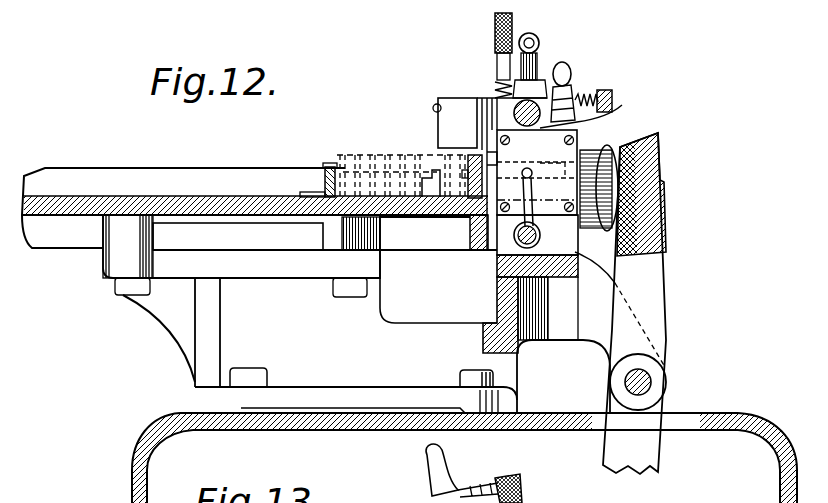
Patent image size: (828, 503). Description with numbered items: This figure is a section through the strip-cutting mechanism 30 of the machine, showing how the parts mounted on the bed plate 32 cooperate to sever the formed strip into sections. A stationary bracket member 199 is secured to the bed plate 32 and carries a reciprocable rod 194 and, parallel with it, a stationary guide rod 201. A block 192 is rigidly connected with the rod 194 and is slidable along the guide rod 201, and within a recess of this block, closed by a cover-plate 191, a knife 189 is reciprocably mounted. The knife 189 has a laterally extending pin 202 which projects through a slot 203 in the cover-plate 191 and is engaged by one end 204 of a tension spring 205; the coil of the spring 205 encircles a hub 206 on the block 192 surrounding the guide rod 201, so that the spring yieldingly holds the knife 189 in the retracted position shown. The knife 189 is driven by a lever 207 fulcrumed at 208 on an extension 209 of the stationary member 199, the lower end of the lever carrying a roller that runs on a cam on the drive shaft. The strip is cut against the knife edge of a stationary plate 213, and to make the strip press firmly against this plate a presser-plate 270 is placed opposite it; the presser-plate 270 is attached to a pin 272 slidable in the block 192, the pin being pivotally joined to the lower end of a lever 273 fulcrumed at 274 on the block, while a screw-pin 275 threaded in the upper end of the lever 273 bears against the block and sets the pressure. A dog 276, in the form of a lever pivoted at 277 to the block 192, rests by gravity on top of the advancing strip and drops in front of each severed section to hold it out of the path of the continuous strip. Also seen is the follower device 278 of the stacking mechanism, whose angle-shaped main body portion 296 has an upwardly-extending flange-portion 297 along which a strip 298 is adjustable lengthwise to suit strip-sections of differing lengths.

The strip-severing mechanism 30 is at (457, 87).
The bed plate 32 is at (743, 420).
The knife 189 is at (662, 140).
The cover-plate 191 is at (576, 205).
The block 192 is at (557, 95).
The rod 194 is at (516, 106).
The stationary bracket member 199 is at (503, 293).
The stationary guide rod 201 is at (530, 242).
The laterally extending pin 202 is at (603, 189).
The slot 203 is at (520, 238).
The spring end 204 is at (540, 228).
The tension spring 205 is at (512, 250).
The hub 206 is at (532, 300).
The lever 207 is at (650, 292).
The fulcrum 208 is at (648, 380).
The extension 209 is at (567, 340).
The stationary plate 213 is at (468, 156).
The presser-plate 270 is at (537, 172).
The pin 272 is at (495, 218).
The lever 273 is at (560, 157).
The fulcrum 274 is at (600, 120).
The screw-pin 275 is at (607, 92).
The dog 276 is at (478, 127).
The pivot 277 is at (437, 106).
The follower device 278 is at (327, 167).
The main body portion 296 is at (312, 196).
The flange-portion 297 is at (312, 165).
The strip 298 is at (331, 166).